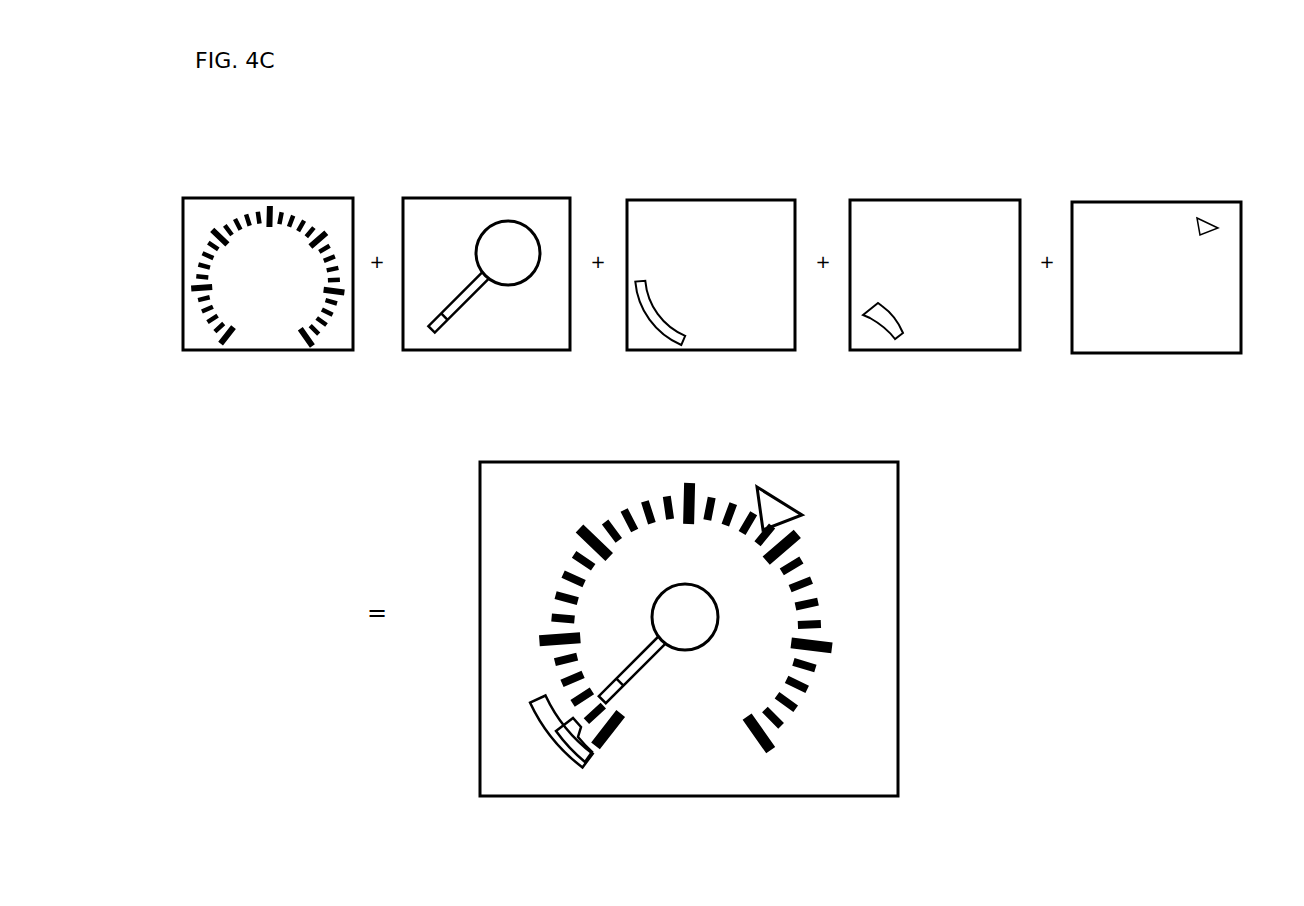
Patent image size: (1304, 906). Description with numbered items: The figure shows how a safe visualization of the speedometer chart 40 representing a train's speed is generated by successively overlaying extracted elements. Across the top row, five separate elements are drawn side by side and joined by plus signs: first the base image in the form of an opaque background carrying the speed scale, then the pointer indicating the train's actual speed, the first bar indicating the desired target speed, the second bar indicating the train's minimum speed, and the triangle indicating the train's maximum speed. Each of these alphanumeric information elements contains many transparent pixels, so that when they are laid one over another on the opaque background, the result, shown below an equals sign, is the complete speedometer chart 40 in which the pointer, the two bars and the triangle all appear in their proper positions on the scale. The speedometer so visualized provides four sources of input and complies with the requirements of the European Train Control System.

The speedometer chart 40 is at (754, 433).